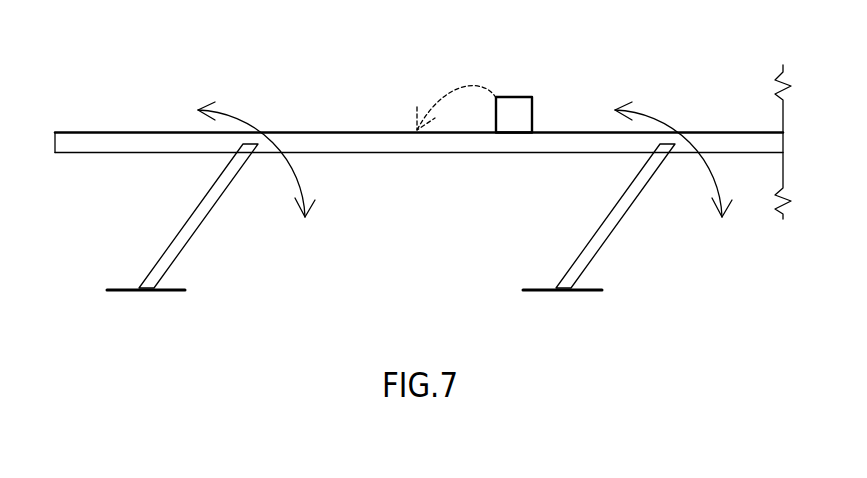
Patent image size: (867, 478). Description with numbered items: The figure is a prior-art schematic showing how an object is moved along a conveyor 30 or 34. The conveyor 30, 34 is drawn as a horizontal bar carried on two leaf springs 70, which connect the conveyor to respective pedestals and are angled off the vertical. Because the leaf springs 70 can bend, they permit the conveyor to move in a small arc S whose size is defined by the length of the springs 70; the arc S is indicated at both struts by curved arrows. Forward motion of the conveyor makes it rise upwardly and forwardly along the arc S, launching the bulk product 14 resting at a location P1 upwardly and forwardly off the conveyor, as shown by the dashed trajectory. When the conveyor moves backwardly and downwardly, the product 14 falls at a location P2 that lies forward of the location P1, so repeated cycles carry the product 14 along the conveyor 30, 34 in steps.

The conveyor 30 is at (423, 142).
The conveyor 34 is at (160, 97).
The bulk product 14 is at (518, 97).
The leaf spring 70 is at (207, 217).
The arc S is at (254, 127).
The location P1 is at (513, 133).
The location P2 is at (417, 133).